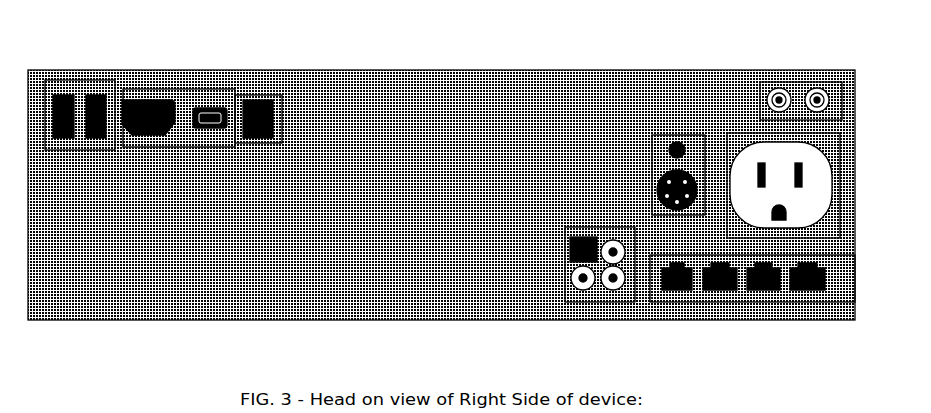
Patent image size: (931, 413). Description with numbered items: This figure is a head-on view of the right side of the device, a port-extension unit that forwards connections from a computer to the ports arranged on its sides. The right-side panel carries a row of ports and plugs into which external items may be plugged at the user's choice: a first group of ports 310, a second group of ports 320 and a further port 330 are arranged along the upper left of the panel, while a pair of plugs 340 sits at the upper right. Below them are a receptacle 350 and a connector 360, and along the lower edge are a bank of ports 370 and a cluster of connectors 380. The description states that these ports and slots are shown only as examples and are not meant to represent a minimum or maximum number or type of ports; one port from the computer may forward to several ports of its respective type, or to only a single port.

The USB ports 310 is at (44, 82).
The HDMI and mini connector ports 320 is at (178, 90).
The network/expansion port 330 is at (282, 98).
The audio jacks 340 is at (840, 82).
The power outlet 350 is at (728, 133).
The S-video connector 360 is at (655, 135).
The Ethernet RJ45 ports 370 is at (837, 303).
The audio/video RCA connectors 380 is at (565, 302).